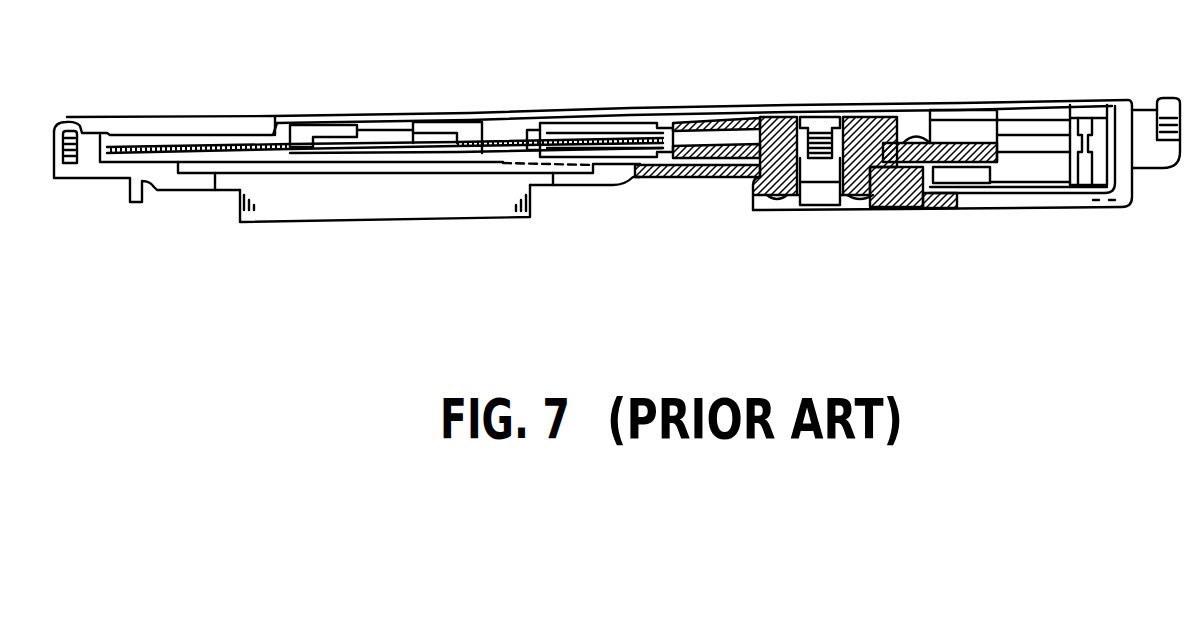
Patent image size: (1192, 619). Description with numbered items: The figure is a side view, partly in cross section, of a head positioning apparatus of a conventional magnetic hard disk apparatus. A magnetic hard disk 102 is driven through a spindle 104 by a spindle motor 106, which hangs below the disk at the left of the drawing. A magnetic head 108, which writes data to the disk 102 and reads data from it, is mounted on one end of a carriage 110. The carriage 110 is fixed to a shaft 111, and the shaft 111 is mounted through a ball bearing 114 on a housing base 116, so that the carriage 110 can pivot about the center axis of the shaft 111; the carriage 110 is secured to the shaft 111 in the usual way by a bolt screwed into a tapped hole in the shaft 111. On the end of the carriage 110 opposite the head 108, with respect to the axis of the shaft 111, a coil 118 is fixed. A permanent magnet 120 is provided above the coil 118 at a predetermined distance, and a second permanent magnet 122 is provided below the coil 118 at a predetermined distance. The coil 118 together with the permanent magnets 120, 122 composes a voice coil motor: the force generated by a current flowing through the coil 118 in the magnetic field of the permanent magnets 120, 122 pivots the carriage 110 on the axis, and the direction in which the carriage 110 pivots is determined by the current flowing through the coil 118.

The magnetic hard disk 102 is at (193, 130).
The spindle 104 is at (315, 127).
The spindle motor 106 is at (310, 208).
The magnetic head 108 is at (527, 132).
The carriage 110 is at (763, 118).
The shaft 111 is at (818, 195).
The ball bearing 114 is at (843, 138).
The housing base 116 is at (727, 178).
The coil 118 is at (1000, 143).
The permanent magnet 120 is at (967, 120).
The permanent magnet 122 is at (967, 173).